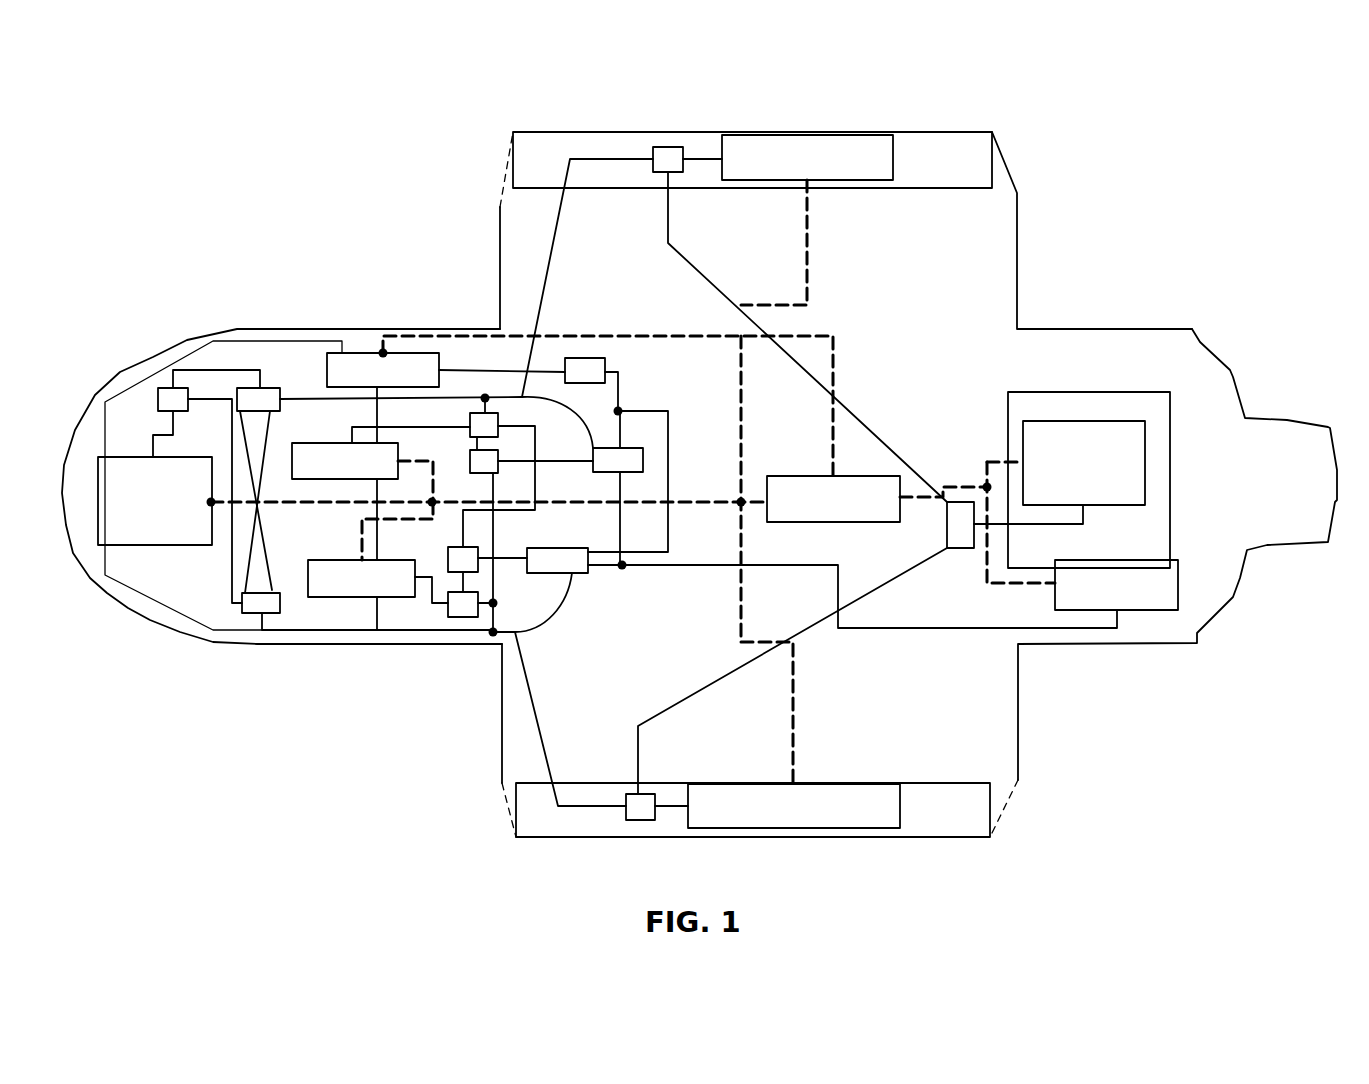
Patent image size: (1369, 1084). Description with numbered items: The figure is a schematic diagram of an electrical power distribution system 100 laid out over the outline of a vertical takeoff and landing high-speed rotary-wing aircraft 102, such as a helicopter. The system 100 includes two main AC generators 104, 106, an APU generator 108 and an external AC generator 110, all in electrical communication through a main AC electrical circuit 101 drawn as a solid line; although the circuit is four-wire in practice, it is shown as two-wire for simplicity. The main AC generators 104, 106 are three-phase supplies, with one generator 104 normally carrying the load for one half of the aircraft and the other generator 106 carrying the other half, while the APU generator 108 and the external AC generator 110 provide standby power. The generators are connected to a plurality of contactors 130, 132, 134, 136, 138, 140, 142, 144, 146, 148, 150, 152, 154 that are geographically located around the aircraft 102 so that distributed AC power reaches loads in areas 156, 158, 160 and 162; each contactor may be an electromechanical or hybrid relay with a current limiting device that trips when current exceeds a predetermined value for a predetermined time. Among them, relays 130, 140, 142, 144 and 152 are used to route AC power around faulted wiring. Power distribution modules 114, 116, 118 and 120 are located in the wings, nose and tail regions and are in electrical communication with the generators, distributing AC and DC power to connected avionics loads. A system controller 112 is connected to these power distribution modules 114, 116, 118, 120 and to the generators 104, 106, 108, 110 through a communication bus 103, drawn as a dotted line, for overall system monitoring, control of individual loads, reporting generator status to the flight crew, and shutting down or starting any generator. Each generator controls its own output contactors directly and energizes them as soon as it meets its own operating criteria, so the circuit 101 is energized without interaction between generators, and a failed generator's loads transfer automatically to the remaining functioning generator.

The electrical power distribution system 100 is at (250, 214).
The main AC electrical circuit 101 is at (673, 566).
The aircraft 102 is at (1015, 782).
The communication bus 103 is at (860, 350).
The main AC generator 104 is at (343, 597).
The main AC generator 106 is at (340, 443).
The APU generator 108 is at (1153, 605).
The external AC generator 110 is at (380, 353).
The system controller 112 is at (862, 475).
The power distribution module 114 is at (805, 128).
The power distribution module 116 is at (108, 442).
The power distribution module 118 is at (832, 848).
The power distribution module 120 is at (1114, 402).
The contactor 130 is at (660, 158).
The contactor 132 is at (593, 358).
The contactor 134 is at (547, 393).
The contactor 136 is at (474, 386).
The contactor 138 is at (494, 452).
The contactor 140 is at (260, 388).
The contactor 142 is at (170, 387).
The contactor 144 is at (250, 613).
The contactor 146 is at (447, 602).
The contactor 148 is at (470, 617).
The contactor 150 is at (513, 637).
The contactor 152 is at (637, 807).
The contactor 154 is at (960, 548).
The area 156 is at (940, 797).
The area 158 is at (1157, 540).
The area 160 is at (770, 133).
The area 162 is at (197, 598).